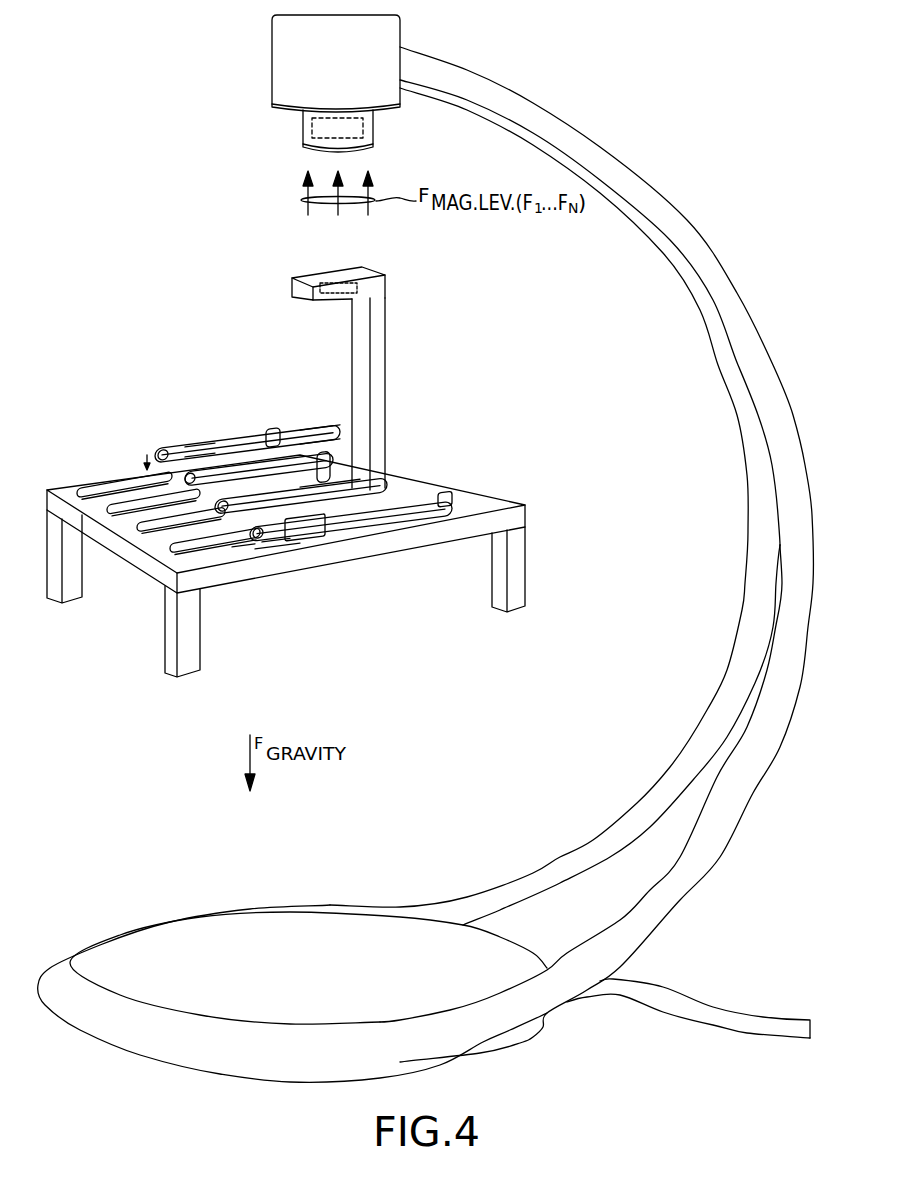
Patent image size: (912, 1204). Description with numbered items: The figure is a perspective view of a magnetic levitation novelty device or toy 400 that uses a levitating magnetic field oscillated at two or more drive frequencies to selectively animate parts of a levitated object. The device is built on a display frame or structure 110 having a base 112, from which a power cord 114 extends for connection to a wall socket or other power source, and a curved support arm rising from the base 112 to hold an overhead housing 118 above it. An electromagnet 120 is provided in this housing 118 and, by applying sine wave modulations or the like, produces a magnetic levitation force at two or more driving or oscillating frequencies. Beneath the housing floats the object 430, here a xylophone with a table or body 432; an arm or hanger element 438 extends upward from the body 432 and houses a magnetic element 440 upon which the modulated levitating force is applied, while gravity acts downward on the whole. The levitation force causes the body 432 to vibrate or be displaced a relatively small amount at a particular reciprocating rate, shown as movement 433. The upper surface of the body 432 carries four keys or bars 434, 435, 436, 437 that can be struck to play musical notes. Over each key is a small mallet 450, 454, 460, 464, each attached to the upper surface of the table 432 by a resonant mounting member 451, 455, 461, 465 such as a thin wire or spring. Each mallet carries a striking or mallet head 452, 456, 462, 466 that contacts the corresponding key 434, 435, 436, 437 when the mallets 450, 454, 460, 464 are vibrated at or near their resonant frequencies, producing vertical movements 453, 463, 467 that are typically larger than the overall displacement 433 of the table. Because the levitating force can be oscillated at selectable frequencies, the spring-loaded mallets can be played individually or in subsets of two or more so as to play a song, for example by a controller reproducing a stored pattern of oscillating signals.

The display frame or structure 110 is at (697, 158).
The base 112 is at (177, 1065).
The power cord 114 is at (682, 1017).
The overhead housing 118 is at (400, 32).
The electromagnet 120 is at (302, 132).
The magnetic levitation novelty device or toy 400 is at (148, 250).
The object 430 is at (98, 403).
The table or body 432 is at (48, 487).
The reciprocating movement 433 is at (540, 501).
The key or bar 434 is at (87, 483).
The key or bar 435 is at (115, 507).
The key or bar 436 is at (143, 527).
The key or bar 437 is at (200, 553).
The arm or hanger element 438 is at (386, 352).
The magnetic element 440 is at (300, 296).
The mallet 450 is at (221, 447).
The resonant mounting member 451 is at (312, 442).
The striking or mallet head 452 is at (160, 447).
The vertical movement 453 is at (144, 463).
The mallet 454 is at (268, 434).
The resonant mounting member 455 is at (350, 472).
The striking or mallet head 456 is at (194, 446).
The mallet 460 is at (300, 530).
The resonant mounting member 461 is at (392, 484).
The striking or mallet head 462 is at (322, 462).
The vertical movement 463 is at (242, 538).
The mallet 464 is at (352, 515).
The resonant mounting member 465 is at (450, 501).
The striking or mallet head 466 is at (263, 541).
The vertical movement 467 is at (260, 556).